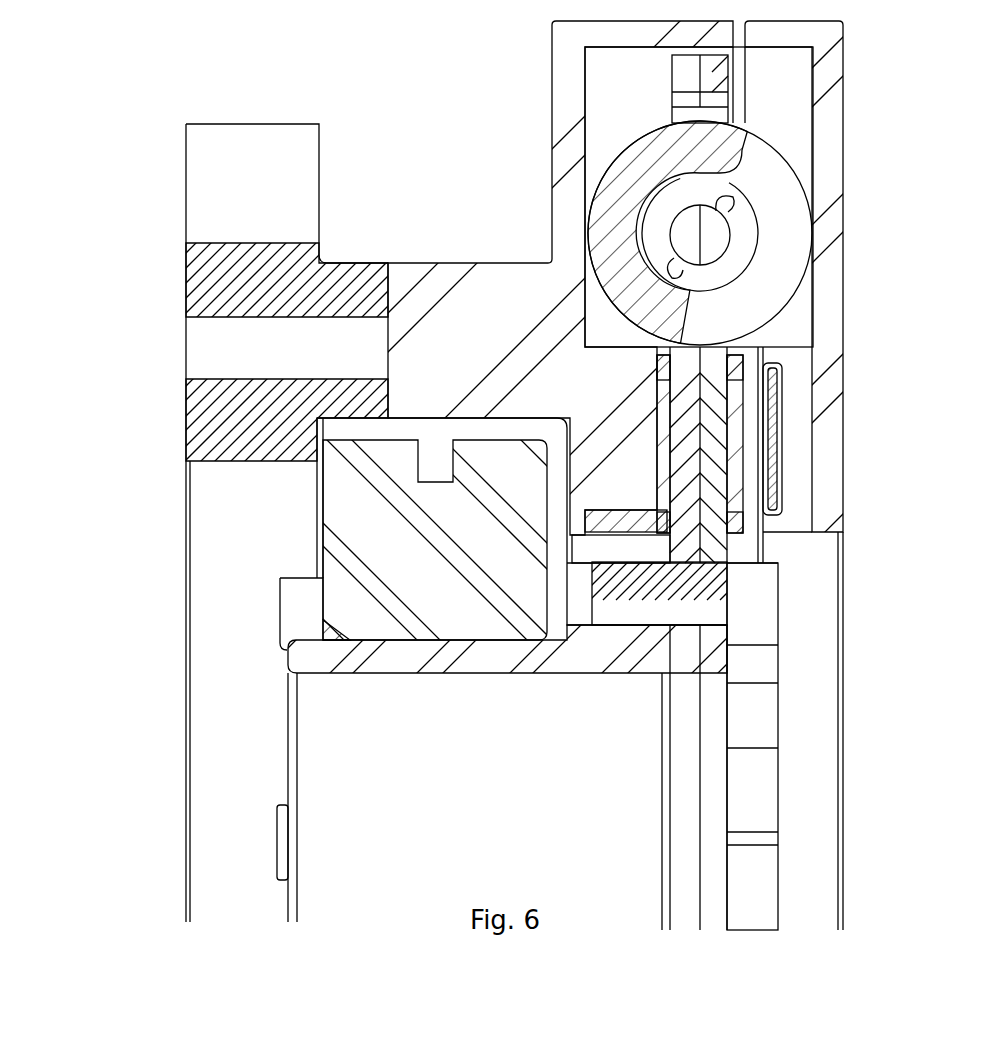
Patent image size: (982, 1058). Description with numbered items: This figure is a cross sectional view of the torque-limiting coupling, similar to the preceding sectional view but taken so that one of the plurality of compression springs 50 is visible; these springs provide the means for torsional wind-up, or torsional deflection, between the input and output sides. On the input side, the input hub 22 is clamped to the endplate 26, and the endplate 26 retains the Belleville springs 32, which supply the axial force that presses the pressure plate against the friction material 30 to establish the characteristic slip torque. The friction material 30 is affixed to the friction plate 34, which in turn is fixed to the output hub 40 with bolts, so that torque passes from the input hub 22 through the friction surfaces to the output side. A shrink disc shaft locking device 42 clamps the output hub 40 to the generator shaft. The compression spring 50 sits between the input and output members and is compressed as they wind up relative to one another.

The input hub 22 is at (472, 292).
The endplate 26 is at (820, 503).
The friction material 30 is at (733, 407).
The Belleville springs 32 is at (772, 437).
The friction plate 34 is at (712, 483).
The output hub 40 is at (575, 652).
The shrink disc shaft locking device 42 is at (343, 508).
The compression spring 50 is at (777, 258).